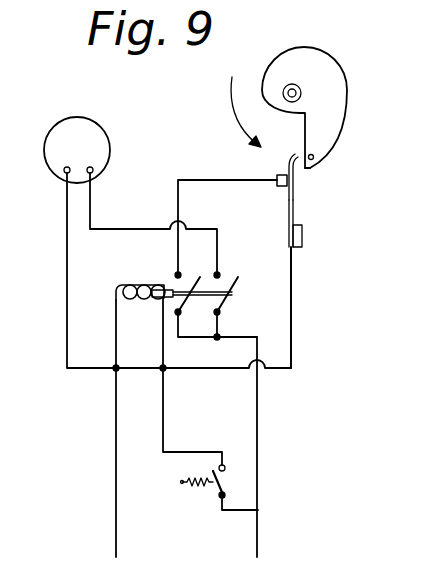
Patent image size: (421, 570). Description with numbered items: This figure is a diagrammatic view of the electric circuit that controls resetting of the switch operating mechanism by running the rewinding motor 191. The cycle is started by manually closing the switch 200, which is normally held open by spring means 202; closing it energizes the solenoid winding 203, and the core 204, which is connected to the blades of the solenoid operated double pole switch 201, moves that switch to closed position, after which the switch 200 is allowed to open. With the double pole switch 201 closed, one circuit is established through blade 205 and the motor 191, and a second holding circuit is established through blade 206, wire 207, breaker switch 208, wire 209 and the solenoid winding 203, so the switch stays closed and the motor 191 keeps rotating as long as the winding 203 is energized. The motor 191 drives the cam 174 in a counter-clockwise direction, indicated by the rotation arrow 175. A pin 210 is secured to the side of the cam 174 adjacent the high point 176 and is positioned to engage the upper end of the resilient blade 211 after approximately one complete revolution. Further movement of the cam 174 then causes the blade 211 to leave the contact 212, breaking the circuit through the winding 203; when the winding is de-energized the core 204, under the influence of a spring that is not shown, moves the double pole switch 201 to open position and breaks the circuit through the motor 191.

The rewinding motor 191 is at (60, 130).
The wire 207 is at (200, 178).
The breaker switch 208 is at (287, 193).
The contact 212 is at (285, 173).
The resilient blade 211 is at (294, 200).
The wire 209 is at (294, 295).
The cam 174 is at (338, 105).
The cam step 175 is at (297, 114).
The pin 210 is at (314, 157).
The high point 176 is at (310, 168).
The solenoid winding 203 is at (145, 283).
The core 204 is at (155, 300).
The double pole switch 201 is at (225, 283).
The blade 206 is at (187, 298).
The blade 205 is at (227, 300).
The spring means 202 is at (197, 478).
The switch 200 is at (215, 488).